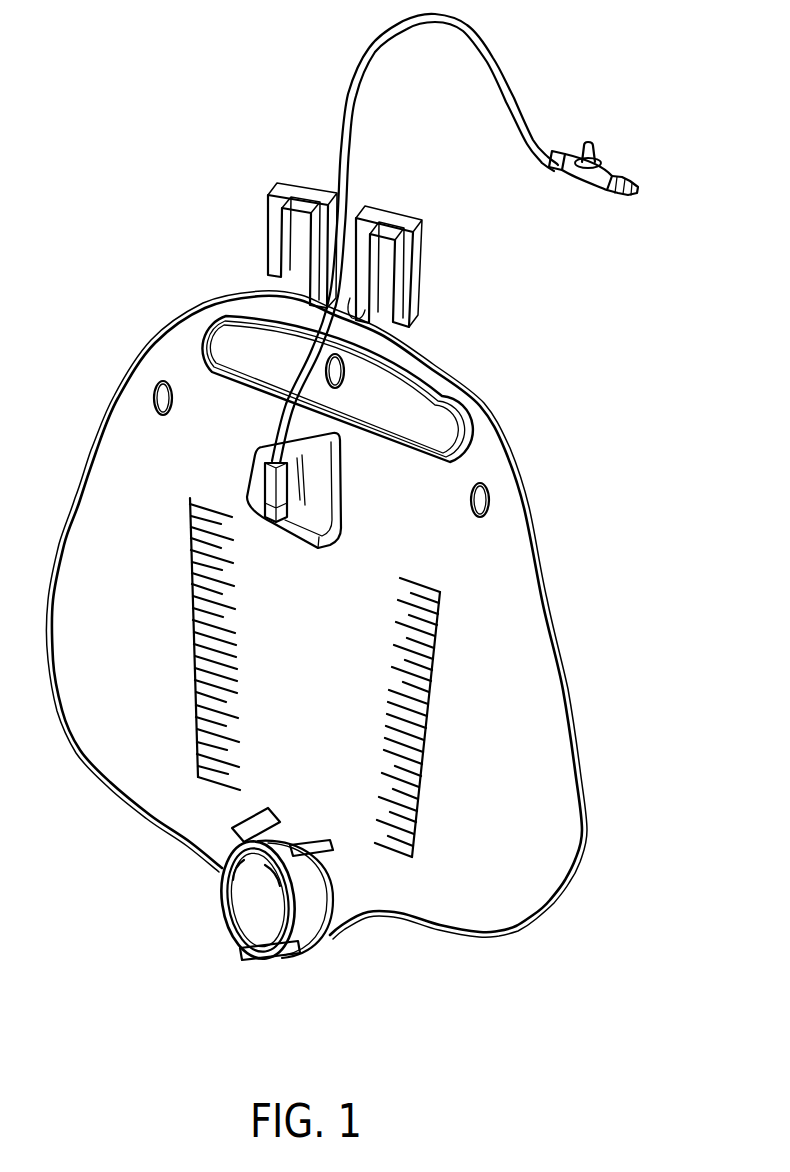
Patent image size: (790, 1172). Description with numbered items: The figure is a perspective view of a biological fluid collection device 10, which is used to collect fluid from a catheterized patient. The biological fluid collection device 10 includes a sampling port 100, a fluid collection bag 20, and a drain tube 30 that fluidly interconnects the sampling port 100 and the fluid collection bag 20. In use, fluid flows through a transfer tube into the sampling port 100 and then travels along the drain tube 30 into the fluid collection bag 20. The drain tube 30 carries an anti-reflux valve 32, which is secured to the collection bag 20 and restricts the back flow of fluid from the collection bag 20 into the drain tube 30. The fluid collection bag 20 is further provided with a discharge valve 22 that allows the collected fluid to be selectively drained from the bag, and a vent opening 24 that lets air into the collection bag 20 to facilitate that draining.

The biological fluid collection device 10 is at (144, 205).
The fluid collection bag 20 is at (549, 703).
The discharge valve 22 is at (216, 879).
The vent opening 24 is at (490, 492).
The drain tube 30 is at (352, 112).
The anti-reflux valve 32 is at (243, 460).
The sampling port 100 is at (622, 136).